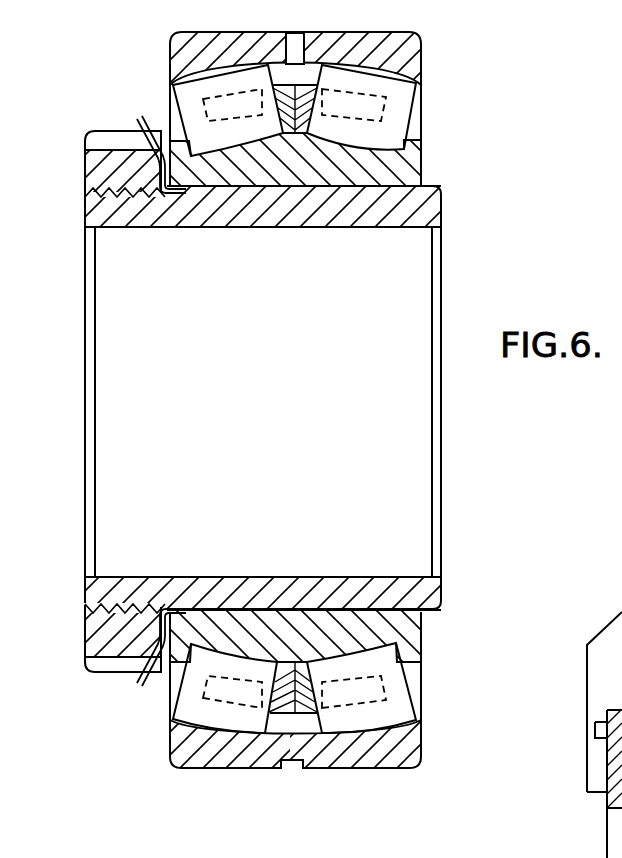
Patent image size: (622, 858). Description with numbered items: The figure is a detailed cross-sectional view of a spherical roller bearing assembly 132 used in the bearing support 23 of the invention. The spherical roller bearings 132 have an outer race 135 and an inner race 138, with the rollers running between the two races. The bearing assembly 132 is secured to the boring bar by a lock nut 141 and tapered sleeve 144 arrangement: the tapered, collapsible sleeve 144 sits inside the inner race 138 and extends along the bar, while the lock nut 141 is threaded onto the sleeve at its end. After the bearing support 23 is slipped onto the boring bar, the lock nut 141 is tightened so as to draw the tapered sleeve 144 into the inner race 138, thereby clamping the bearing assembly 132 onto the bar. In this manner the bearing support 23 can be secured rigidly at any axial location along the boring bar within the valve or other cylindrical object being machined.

The bearing support 23 is at (337, 385).
The outer race 135 is at (405, 33).
The spherical roller bearing assembly 132 is at (398, 96).
The inner race 138 is at (421, 168).
The tapered sleeve 144 is at (88, 208).
The lock nut 141 is at (90, 636).